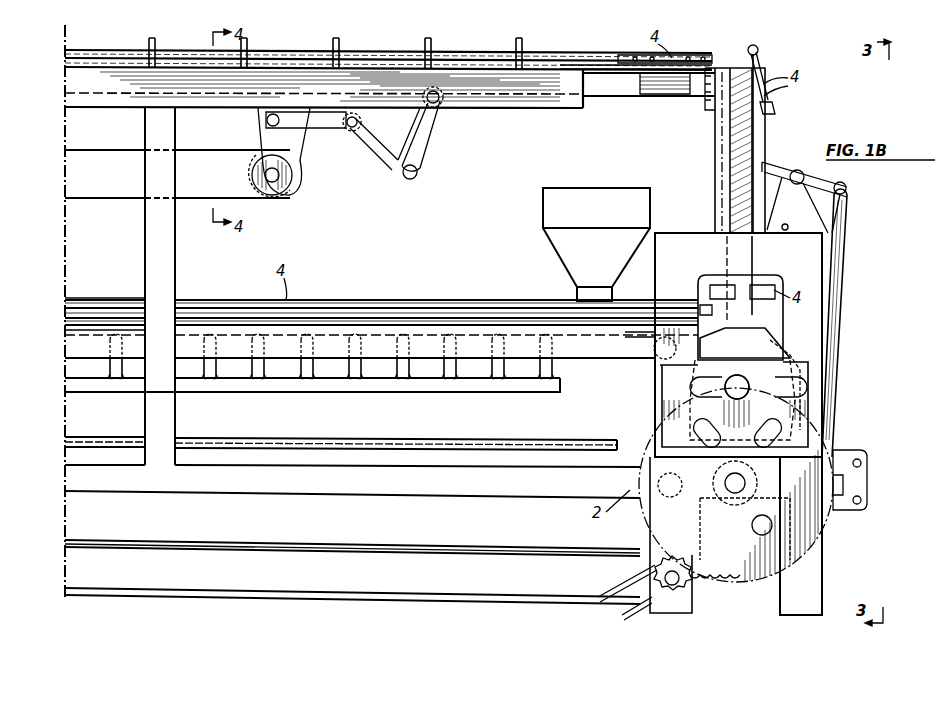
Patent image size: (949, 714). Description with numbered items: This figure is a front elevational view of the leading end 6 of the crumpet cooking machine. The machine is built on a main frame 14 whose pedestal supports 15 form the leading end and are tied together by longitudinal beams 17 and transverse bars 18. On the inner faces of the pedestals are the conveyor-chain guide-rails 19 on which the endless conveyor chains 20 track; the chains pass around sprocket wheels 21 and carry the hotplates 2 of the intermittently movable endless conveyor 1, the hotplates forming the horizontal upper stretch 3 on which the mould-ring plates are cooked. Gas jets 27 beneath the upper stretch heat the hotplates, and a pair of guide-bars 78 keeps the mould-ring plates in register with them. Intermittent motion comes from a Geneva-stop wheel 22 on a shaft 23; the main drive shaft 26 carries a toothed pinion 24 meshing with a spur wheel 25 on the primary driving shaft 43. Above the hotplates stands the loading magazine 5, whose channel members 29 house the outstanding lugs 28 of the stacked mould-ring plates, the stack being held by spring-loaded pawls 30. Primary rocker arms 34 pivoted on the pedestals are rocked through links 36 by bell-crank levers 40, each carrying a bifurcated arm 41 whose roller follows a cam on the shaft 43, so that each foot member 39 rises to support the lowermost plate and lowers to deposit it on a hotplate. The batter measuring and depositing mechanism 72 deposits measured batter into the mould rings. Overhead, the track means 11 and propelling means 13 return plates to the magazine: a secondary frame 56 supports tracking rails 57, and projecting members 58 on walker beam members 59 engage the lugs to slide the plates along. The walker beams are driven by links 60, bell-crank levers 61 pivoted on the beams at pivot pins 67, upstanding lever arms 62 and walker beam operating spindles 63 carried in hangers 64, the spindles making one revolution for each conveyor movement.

The endless conveyor 1 is at (406, 439).
The hotplate 2 is at (790, 348).
The upper stretch 3 is at (358, 314).
The loading magazine 5 is at (757, 142).
The leading end 6 is at (822, 316).
The overhead track means 11 is at (600, 97).
The mould-ring plate propelling means 13 is at (458, 112).
The main frame 14 is at (305, 493).
The pedestal supports 15 is at (792, 430).
The longitudinal beams 17 is at (511, 495).
The transverse bars 18 is at (658, 354).
The conveyor-chain guide-rails 19 is at (620, 358).
The endless conveyor chains 20 is at (213, 437).
The sprocket wheels 21 is at (800, 362).
The Geneva-stop wheel 22 is at (751, 384).
The shaft 23 is at (728, 390).
The toothed pinion 24 is at (622, 582).
The spur wheel 25 is at (800, 548).
The main drive shaft 26 is at (690, 592).
The jets 27 is at (337, 378).
The outstanding lugs 28 is at (680, 56).
The channel members 29 is at (765, 282).
The spring-loaded pawls 30 is at (774, 281).
The primary rocker arms 34 is at (784, 176).
The links 36 is at (838, 265).
The foot member 39 is at (725, 282).
The bell-crank levers 40 is at (868, 484).
The bifurcated arm 41 is at (845, 505).
The primary driving shaft 43 is at (746, 486).
The secondary frame 56 is at (660, 93).
The tracking rails 57 is at (580, 64).
The projecting members 58 is at (428, 52).
The walker beam members 59 is at (518, 88).
The links 60 is at (422, 156).
The bell-crank levers 61 is at (386, 162).
The upstanding lever arms 62 is at (272, 123).
The walker beam operating spindles 63 is at (288, 190).
The bearing plates or hangers 64 is at (314, 140).
The bell-crank lever pivot pin 67 is at (360, 122).
The crumpet batter measuring and depositing mechanism 72 is at (596, 244).
The guide-bars 78 is at (90, 296).